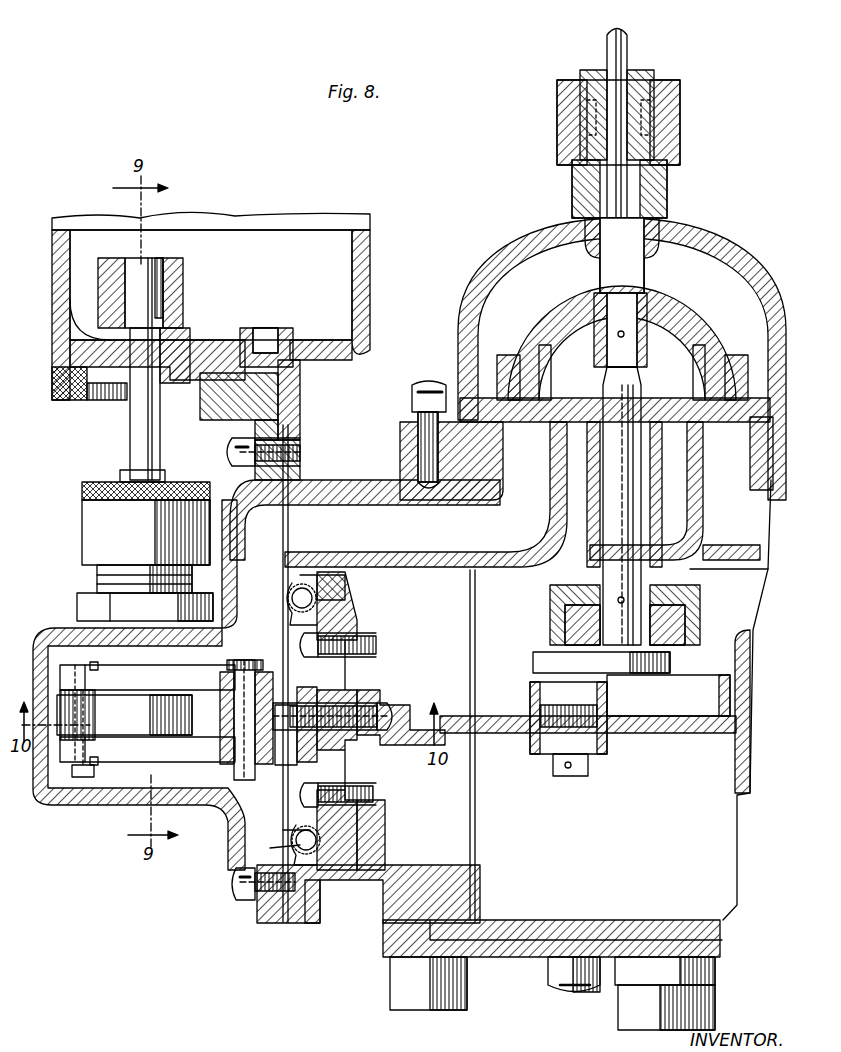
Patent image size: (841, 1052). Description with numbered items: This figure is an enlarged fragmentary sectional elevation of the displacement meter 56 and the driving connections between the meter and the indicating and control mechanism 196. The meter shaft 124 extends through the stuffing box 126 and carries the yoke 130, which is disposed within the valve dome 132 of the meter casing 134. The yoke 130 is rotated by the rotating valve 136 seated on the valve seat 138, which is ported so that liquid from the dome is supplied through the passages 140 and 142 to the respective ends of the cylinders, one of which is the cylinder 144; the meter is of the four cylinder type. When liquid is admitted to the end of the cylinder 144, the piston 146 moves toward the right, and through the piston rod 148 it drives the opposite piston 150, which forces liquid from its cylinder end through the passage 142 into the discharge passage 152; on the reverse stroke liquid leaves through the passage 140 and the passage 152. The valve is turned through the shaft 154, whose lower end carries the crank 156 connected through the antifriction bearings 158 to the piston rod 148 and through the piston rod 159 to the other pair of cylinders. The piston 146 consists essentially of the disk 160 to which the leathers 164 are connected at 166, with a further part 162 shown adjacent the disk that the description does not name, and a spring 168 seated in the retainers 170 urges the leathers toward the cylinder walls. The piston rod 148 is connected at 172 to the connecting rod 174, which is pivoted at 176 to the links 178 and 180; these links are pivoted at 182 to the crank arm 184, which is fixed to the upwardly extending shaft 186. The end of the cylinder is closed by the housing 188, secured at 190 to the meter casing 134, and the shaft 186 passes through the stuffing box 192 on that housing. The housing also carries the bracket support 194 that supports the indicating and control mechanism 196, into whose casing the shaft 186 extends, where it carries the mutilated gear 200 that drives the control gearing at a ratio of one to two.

The meter 56 is at (315, 918).
The meter shaft 124 is at (628, 38).
The stuffing box 126 is at (680, 148).
The yoke 130 is at (672, 286).
The valve dome 132 is at (676, 232).
The meter casing 134 is at (340, 490).
The rotating valve 136 is at (712, 306).
The valve seat 138 is at (500, 425).
The passage 140 is at (460, 500).
The passage 142 is at (745, 500).
The cylinder 144 is at (425, 865).
The piston 146 is at (358, 824).
The piston rod 148 is at (497, 737).
The opposite piston 150 is at (740, 758).
The discharge passage 152 is at (672, 512).
The shaft 154 is at (640, 470).
The crank 156 is at (545, 655).
The antifriction bearings 158 is at (552, 690).
The piston rod 159 is at (662, 700).
The disk 160 is at (352, 605).
The screw 162 is at (368, 785).
The leathers 164 is at (282, 918).
The connection 166 is at (302, 806).
The spring 168 is at (270, 848).
The retainers 170 is at (283, 830).
The connection 172 is at (300, 748).
The connecting rod 174 is at (285, 655).
The pivot 176 is at (236, 662).
The link 178 is at (128, 755).
The link 180 is at (120, 685).
The pivot 182 is at (88, 778).
The crank arm 184 is at (124, 715).
The shaft 186 is at (130, 432).
The housing 188 is at (58, 616).
The securing means 190 is at (268, 436).
The stuffing box 192 is at (95, 524).
The bracket support 194 is at (272, 384).
The indicating and control mechanism 196 is at (370, 275).
The mutilated gear 200 is at (110, 262).